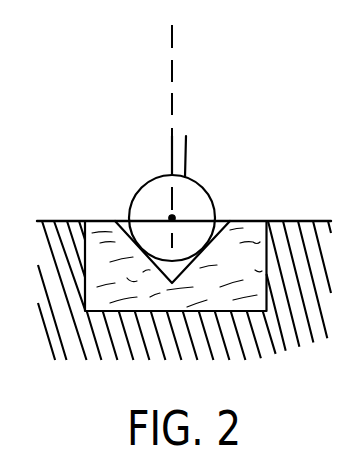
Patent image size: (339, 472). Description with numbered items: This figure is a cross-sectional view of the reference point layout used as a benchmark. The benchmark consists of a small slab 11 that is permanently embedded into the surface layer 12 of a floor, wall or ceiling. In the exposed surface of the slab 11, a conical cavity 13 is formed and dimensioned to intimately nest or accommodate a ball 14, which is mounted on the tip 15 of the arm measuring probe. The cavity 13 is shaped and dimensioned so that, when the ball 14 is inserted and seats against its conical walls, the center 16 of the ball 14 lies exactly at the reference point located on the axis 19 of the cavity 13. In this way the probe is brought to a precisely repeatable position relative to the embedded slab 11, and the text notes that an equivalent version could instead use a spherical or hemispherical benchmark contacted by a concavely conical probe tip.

The slab 11 is at (250, 221).
The surface layer 12 is at (50, 221).
The conical cavity 13 is at (217, 220).
The ball 14 is at (166, 175).
The tip 15 is at (187, 157).
The center 16 is at (170, 218).
The axis 19 is at (172, 44).